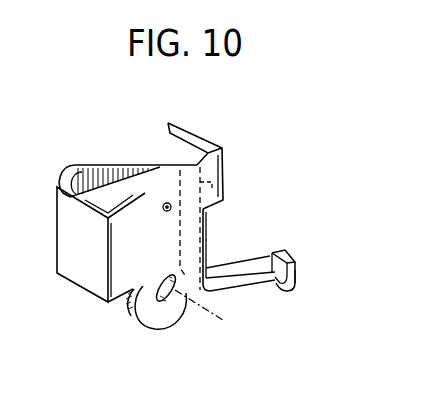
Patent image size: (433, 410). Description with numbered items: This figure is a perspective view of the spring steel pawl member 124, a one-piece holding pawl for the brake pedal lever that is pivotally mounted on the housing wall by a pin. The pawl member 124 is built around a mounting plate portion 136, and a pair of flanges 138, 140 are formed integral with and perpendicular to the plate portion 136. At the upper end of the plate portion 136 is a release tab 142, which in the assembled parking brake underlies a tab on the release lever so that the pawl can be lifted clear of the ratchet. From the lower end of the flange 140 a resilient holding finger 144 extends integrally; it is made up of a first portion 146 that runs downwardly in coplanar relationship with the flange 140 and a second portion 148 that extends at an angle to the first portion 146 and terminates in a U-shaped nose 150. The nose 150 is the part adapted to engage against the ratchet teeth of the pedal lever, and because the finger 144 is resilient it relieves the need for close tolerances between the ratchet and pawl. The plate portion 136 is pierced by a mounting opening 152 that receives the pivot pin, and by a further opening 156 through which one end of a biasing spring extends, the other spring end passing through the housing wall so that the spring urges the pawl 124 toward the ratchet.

The spring steel pawl member 124 is at (271, 162).
The mounting plate portion 136 is at (139, 307).
The flange 138 is at (77, 265).
The flange 140 is at (183, 137).
The release tab 142 is at (110, 172).
The resilient holding finger 144 is at (253, 294).
The first portion 146 is at (207, 240).
The second portion 148 is at (239, 266).
The U-shaped nose 150 is at (295, 277).
The mounting opening 152 is at (172, 299).
The opening 156 is at (164, 204).